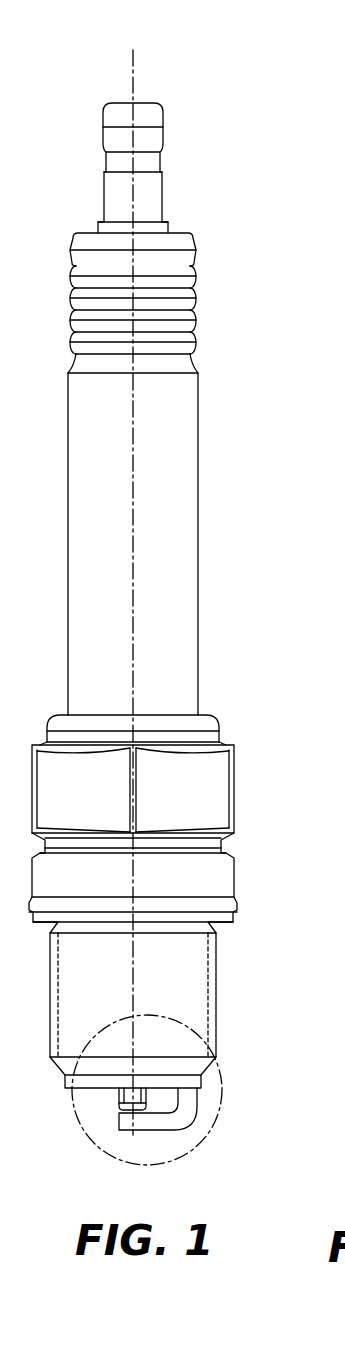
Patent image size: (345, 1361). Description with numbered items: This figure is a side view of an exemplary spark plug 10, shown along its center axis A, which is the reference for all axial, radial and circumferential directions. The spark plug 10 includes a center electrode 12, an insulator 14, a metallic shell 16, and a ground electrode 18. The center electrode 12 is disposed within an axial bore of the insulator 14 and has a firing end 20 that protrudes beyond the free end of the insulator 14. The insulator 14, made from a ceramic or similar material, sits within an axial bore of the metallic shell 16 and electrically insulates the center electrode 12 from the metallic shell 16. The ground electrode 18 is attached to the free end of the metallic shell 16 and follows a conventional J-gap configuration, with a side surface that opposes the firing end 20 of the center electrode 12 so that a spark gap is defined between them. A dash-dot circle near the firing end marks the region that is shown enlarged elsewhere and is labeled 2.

The spark plug 10 is at (156, 605).
The center axis A is at (132, 65).
The insulator 14 is at (175, 413).
The metallic shell 16 is at (213, 778).
The center electrode 12 is at (138, 1094).
The ground electrode 18 is at (173, 1120).
The firing end 20 is at (101, 1121).
The detail region of FIG. 2 is at (83, 1125).